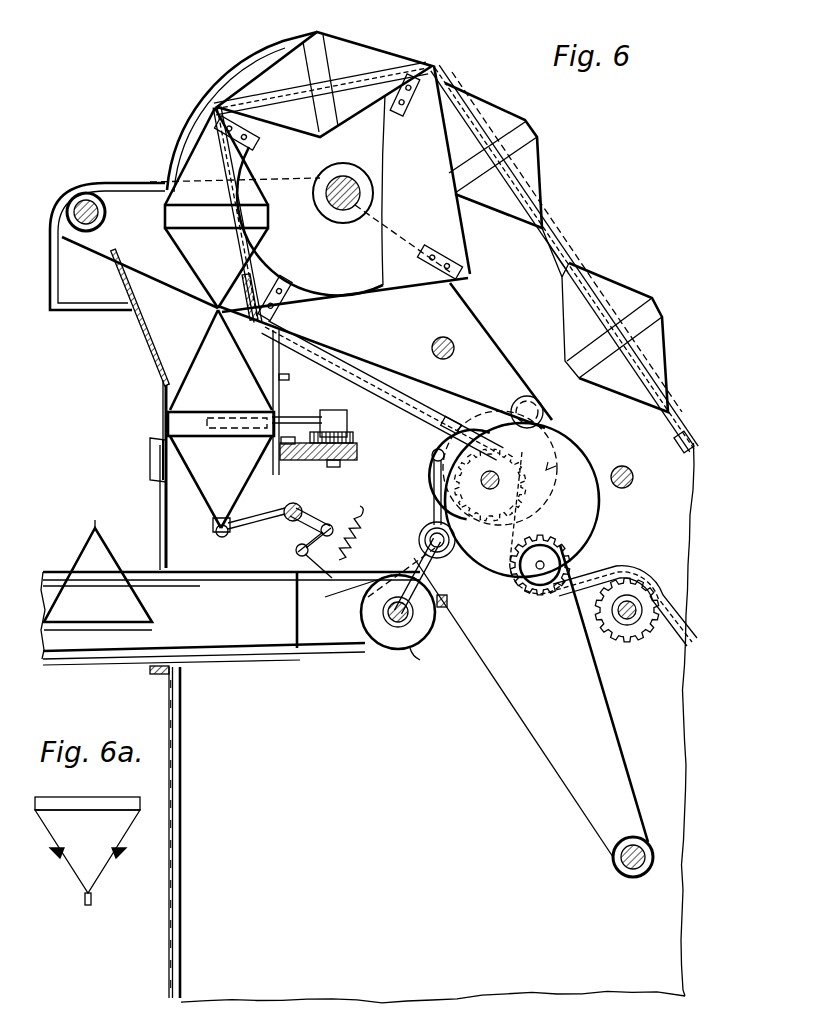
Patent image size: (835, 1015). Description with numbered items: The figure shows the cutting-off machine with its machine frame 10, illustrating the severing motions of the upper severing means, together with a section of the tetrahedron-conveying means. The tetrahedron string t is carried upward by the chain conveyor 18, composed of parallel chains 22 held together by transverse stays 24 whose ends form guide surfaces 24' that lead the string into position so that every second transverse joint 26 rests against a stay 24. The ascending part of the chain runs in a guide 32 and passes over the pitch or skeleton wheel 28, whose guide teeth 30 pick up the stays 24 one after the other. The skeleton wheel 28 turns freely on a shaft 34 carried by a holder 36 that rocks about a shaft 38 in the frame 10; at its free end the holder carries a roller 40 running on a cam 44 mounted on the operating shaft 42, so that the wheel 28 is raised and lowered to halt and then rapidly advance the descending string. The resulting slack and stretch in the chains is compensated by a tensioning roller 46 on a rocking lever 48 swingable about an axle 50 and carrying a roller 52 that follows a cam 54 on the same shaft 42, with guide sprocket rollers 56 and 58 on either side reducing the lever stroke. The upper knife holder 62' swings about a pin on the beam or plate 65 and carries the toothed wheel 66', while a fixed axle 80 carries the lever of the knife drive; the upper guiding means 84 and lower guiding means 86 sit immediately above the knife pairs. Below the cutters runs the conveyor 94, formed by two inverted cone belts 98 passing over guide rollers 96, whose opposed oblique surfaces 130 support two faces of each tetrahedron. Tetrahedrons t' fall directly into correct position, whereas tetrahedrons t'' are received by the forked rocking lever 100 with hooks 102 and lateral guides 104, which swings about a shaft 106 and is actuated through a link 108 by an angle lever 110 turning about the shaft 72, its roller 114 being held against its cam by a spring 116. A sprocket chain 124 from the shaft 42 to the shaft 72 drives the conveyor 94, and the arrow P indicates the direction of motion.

In FIG. 6, the machine frame 10 is at (222, 80).
In FIG. 6, the chain conveyor 18 is at (506, 172).
In FIG. 6, the chain 22 is at (592, 292).
In FIG. 6, the transverse stay 24 is at (567, 242).
In FIG. 6, the guide surface 24' is at (289, 192).
In FIG. 6, the transverse joint 26 is at (170, 216).
In FIG. 6, the pitch or skeleton wheel 28 is at (440, 78).
In FIG. 6, the guide teeth 30 is at (467, 278).
In FIG. 6, the guide 32 is at (556, 263).
In FIG. 6, the shaft 34 is at (362, 186).
In FIG. 6, the holder 36 is at (122, 196).
In FIG. 6, the shaft 38 is at (82, 198).
In FIG. 6, the roller 40 is at (520, 400).
In FIG. 6, the operating shaft 42 is at (500, 488).
In FIG. 6, the cam 44 is at (590, 512).
In FIG. 6, the tensioning roller 46 is at (573, 561).
In FIG. 6, the rocking lever 48 is at (520, 706).
In FIG. 6, the axle 50 is at (614, 860).
In FIG. 6, the roller 52 is at (448, 550).
In FIG. 6, the cam 54 is at (546, 436).
In FIG. 6, the guide sprocket roller 56 is at (506, 464).
In FIG. 6, the guide sprocket roller 58 is at (634, 640).
In FIG. 6, the upper knife holder 62' is at (300, 395).
In FIG. 6, the beam or plate 65 is at (357, 452).
In FIG. 6, the toothed wheel 66' is at (350, 421).
In FIG. 6, the shaft 72 is at (372, 614).
In FIG. 6, the fixed axle 80 is at (624, 468).
In FIG. 6, the upper guiding means 84 is at (127, 276).
In FIG. 6, the lower guiding means 86 is at (160, 447).
In FIG. 6, the conveyor 94 is at (266, 582).
In FIG. 6, the guide roller 96 is at (411, 648).
In FIG. 6, the cone belt 98 is at (312, 660).
In FIG. 6A, the cone belt 98 is at (50, 854).
In FIG. 6, the forked rocking lever 100 is at (250, 516).
In FIG. 6, the hook 102 is at (224, 537).
In FIG. 6, the lateral guide 104 is at (218, 522).
In FIG. 6, the shaft 106 is at (293, 503).
In FIG. 6, the link 108 is at (318, 524).
In FIG. 6, the angle lever 110 is at (296, 551).
In FIG. 6, the roller 114 is at (432, 456).
In FIG. 6, the spring 116 is at (364, 514).
In FIG. 6, the sprocket chain 124 is at (442, 607).
In FIG. 6A, the oblique surface 130 is at (60, 854).
In FIG. 6, the tetrahedron string t is at (493, 154).
In FIG. 6, the tetrahedron t' is at (98, 575).
In FIG. 6, the tetrahedron t'' is at (144, 471).
In FIG. 6, the direction arrow P is at (558, 473).